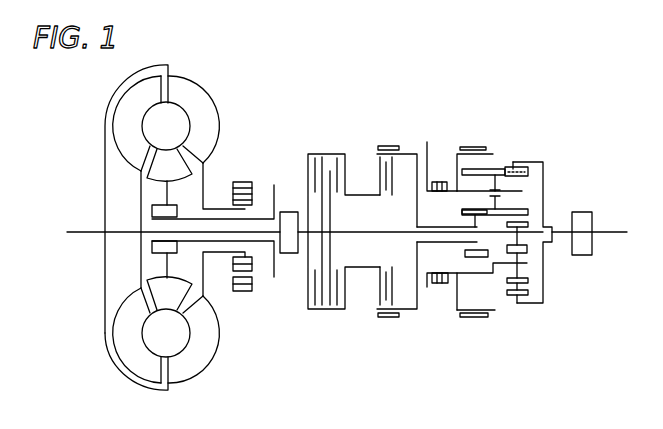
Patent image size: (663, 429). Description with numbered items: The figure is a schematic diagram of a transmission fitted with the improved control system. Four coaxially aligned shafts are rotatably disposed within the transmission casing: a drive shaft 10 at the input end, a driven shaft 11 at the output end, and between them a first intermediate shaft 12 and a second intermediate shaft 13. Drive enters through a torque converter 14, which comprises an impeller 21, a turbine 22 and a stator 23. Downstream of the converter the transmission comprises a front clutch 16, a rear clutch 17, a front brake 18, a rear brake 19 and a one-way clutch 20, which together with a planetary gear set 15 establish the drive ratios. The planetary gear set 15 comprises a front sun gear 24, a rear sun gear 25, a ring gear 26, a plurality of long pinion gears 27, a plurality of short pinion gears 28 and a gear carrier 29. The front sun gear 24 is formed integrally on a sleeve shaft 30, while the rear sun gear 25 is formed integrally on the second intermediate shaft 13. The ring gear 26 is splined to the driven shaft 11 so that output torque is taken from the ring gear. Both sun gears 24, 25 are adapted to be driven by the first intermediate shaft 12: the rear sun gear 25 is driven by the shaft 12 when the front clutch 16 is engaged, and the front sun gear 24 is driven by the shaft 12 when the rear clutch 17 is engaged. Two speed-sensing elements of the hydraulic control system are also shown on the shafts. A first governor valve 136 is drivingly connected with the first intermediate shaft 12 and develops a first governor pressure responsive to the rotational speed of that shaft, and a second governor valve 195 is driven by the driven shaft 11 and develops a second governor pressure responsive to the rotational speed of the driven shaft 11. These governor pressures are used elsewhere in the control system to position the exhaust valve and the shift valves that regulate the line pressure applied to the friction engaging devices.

The drive shaft 10 is at (73, 233).
The driven shaft 11 is at (616, 236).
The first intermediate shaft 12 is at (247, 228).
The second intermediate shaft 13 is at (346, 232).
The torque converter 14 is at (176, 221).
The planetary gear set 15 is at (504, 220).
The front clutch 16 is at (319, 154).
The rear clutch 17 is at (397, 163).
The front brake 18 is at (387, 146).
The rear brake 19 is at (462, 147).
The one-way clutch 20 is at (441, 287).
The impeller 21 is at (177, 238).
The turbine 22 is at (156, 136).
The stator 23 is at (169, 229).
The front sun gear 24 is at (465, 252).
The rear sun gear 25 is at (530, 222).
The ring gear 26 is at (527, 158).
The long pinion gears 27 is at (488, 170).
The short pinion gears 28 is at (507, 283).
The gear carrier 29 is at (454, 309).
The sleeve shaft 30 is at (431, 228).
The first governor valve 136 is at (291, 254).
The second governor valve 195 is at (581, 255).